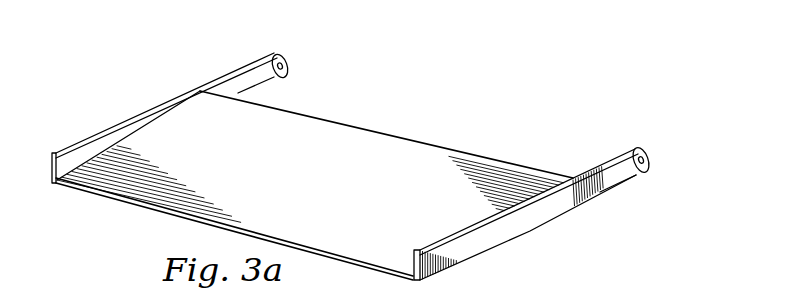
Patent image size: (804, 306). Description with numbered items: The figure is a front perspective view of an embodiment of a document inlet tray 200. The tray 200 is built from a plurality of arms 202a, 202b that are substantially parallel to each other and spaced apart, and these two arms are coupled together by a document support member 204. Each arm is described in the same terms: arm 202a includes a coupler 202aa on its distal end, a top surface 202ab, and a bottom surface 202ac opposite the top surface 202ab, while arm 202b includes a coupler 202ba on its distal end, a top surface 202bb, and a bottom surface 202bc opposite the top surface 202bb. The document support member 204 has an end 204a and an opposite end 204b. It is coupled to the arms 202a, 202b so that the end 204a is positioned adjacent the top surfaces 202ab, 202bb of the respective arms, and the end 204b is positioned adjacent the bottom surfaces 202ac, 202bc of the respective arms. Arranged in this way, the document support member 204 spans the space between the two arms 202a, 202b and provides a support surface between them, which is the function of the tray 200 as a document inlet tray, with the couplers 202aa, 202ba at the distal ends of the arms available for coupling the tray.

The document inlet tray 200 is at (157, 81).
The arm 202a is at (71, 162).
The coupler 202aa is at (288, 70).
The top surface 202ab is at (233, 72).
The bottom surface 202ac is at (270, 83).
The arm 202b is at (490, 233).
The coupler 202ba is at (648, 166).
The top surface 202bb is at (573, 178).
The bottom surface 202bc is at (618, 188).
The document support member 204 is at (343, 184).
The end 204a is at (440, 152).
The end 204b is at (153, 206).